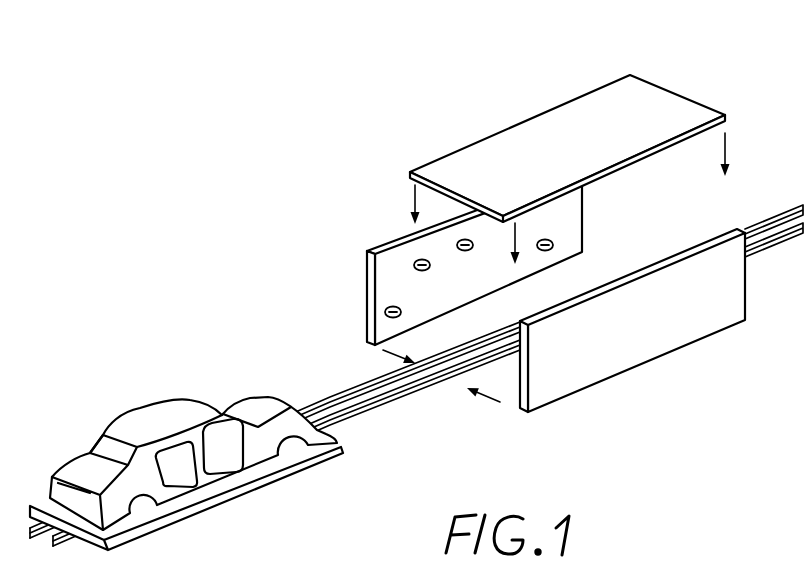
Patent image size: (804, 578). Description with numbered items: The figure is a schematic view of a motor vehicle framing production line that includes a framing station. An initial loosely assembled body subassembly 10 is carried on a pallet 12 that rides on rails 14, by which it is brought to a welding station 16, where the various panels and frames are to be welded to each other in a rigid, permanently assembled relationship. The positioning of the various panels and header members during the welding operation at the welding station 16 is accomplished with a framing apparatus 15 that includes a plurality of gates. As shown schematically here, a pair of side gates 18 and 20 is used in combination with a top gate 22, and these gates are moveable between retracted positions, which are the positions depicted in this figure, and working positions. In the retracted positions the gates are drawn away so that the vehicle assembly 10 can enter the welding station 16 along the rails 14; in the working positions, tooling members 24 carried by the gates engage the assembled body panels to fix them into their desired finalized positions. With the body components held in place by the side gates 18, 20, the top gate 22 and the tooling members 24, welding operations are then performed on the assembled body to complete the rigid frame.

The body subassembly 10 is at (166, 392).
The pallet 12 is at (229, 491).
The rails 14 is at (372, 422).
The framing apparatus 15 is at (468, 160).
The welding station 16 is at (416, 246).
The side gate 18 is at (364, 305).
The side gate 20 is at (570, 382).
The top gate 22 is at (567, 121).
The tooling members 24 is at (470, 251).